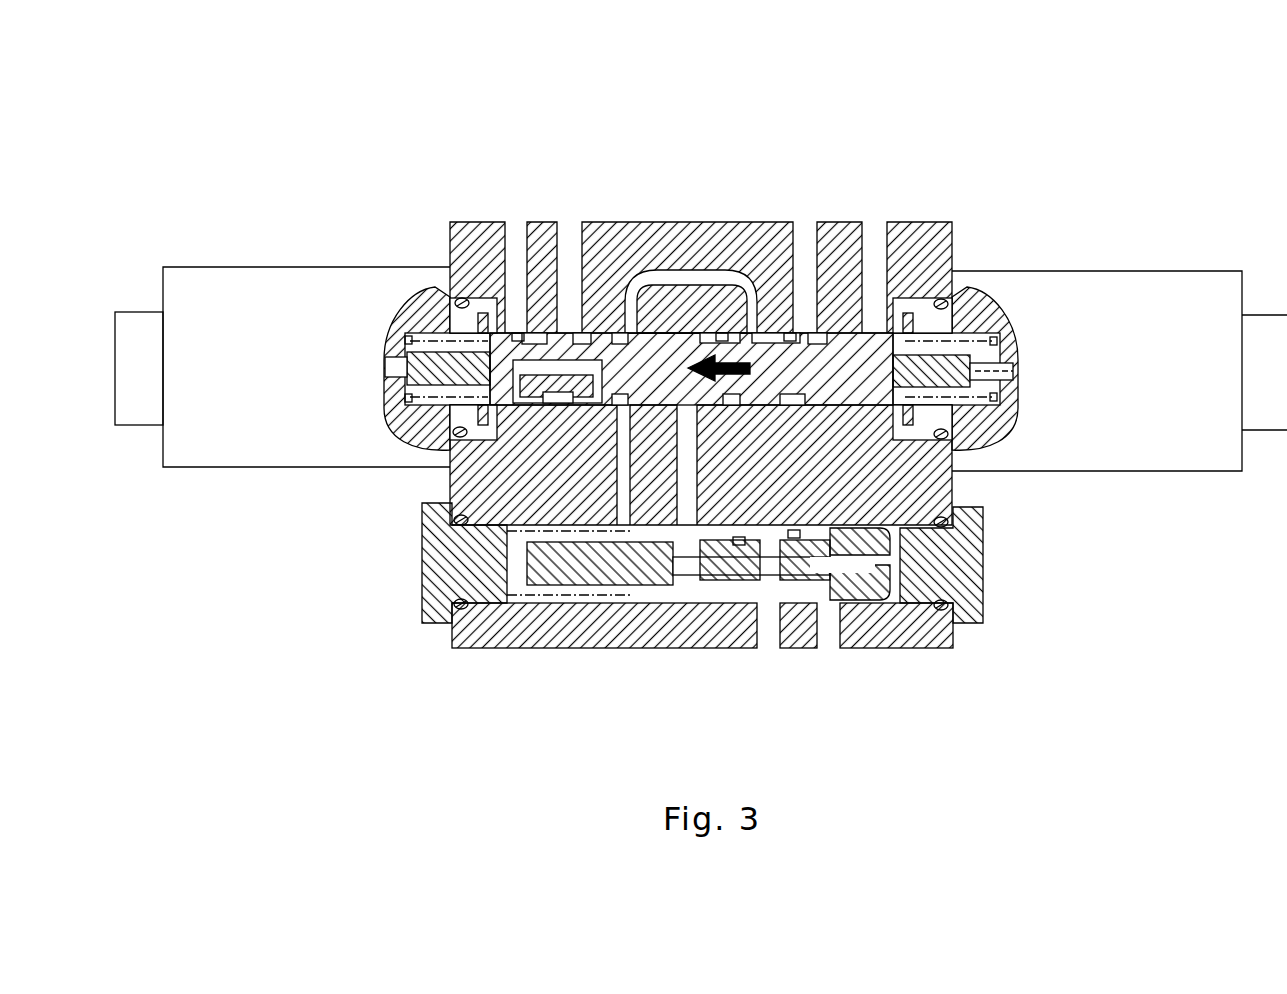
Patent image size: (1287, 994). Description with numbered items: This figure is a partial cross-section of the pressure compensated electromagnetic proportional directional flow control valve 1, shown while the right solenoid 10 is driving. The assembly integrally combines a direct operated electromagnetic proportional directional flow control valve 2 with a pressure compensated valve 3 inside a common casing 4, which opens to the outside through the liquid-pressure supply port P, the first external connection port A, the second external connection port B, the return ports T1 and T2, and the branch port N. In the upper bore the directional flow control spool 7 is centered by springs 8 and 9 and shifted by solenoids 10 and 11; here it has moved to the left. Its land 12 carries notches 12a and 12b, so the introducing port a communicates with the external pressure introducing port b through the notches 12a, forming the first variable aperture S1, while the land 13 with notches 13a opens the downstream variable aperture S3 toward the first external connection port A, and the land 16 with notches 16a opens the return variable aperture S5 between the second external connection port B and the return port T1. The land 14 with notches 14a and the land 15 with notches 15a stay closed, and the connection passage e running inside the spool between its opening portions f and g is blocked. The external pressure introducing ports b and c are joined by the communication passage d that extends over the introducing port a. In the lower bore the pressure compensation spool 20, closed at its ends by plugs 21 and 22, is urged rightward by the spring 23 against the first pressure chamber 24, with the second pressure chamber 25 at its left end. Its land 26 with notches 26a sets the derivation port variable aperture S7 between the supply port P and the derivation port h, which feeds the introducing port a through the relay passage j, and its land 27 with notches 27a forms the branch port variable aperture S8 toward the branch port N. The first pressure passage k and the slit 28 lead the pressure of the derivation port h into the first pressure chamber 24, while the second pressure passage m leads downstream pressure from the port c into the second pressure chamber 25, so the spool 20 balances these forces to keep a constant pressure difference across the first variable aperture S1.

The pressure compensated electromagnetic proportional directional flow control valve 1 is at (308, 138).
The electromagnetic proportional directional flow control valve 2 is at (450, 237).
The pressure compensated valve 3 is at (460, 648).
The casing 4 is at (955, 233).
The directional flow control spool 7 is at (872, 345).
The spring 8 is at (970, 340).
The spring 9 is at (433, 337).
The solenoid 10 is at (1182, 271).
The solenoid 11 is at (197, 268).
The land 12 is at (712, 333).
The notches 12a is at (740, 333).
The notches 12b is at (640, 333).
The land 13 is at (775, 333).
The notches 13a is at (813, 333).
The land 14 is at (562, 367).
The notches 14a is at (598, 330).
The land 15 is at (855, 333).
The notches 15a is at (838, 333).
The land 16 is at (480, 322).
The notches 16a is at (545, 322).
The pressure compensation spool 20 is at (607, 580).
The plug 21 is at (967, 612).
The plug 22 is at (422, 612).
The spring 23 is at (545, 605).
The first pressure chamber 24 is at (903, 607).
The second pressure chamber 25 is at (520, 578).
The land 26 is at (760, 528).
The notches 26a is at (726, 530).
The land 27 is at (803, 525).
The notches 27a is at (867, 567).
The slit 28 is at (888, 543).
The first variable aperture S1 is at (722, 338).
The downstream variable aperture S3 is at (790, 338).
The return variable aperture S5 is at (518, 335).
The derivation port variable aperture S7 is at (738, 540).
The branch port variable aperture S8 is at (793, 533).
The introducing port a is at (686, 333).
The external pressure introducing port b is at (752, 333).
The external pressure introducing port c is at (628, 330).
The communication passage d is at (655, 333).
The connection passage e is at (565, 333).
The opening portion f is at (623, 472).
The opening portion g is at (588, 410).
The derivation port h is at (712, 593).
The relay passage j is at (683, 492).
The first pressure passage k is at (887, 605).
The second pressure passage m is at (612, 480).
The return port T1 is at (516, 267).
The return port T2 is at (874, 267).
The first external connection port A is at (805, 267).
The second external connection port B is at (569, 267).
The liquid-pressure supply port P is at (768, 640).
The branch port N is at (828, 640).